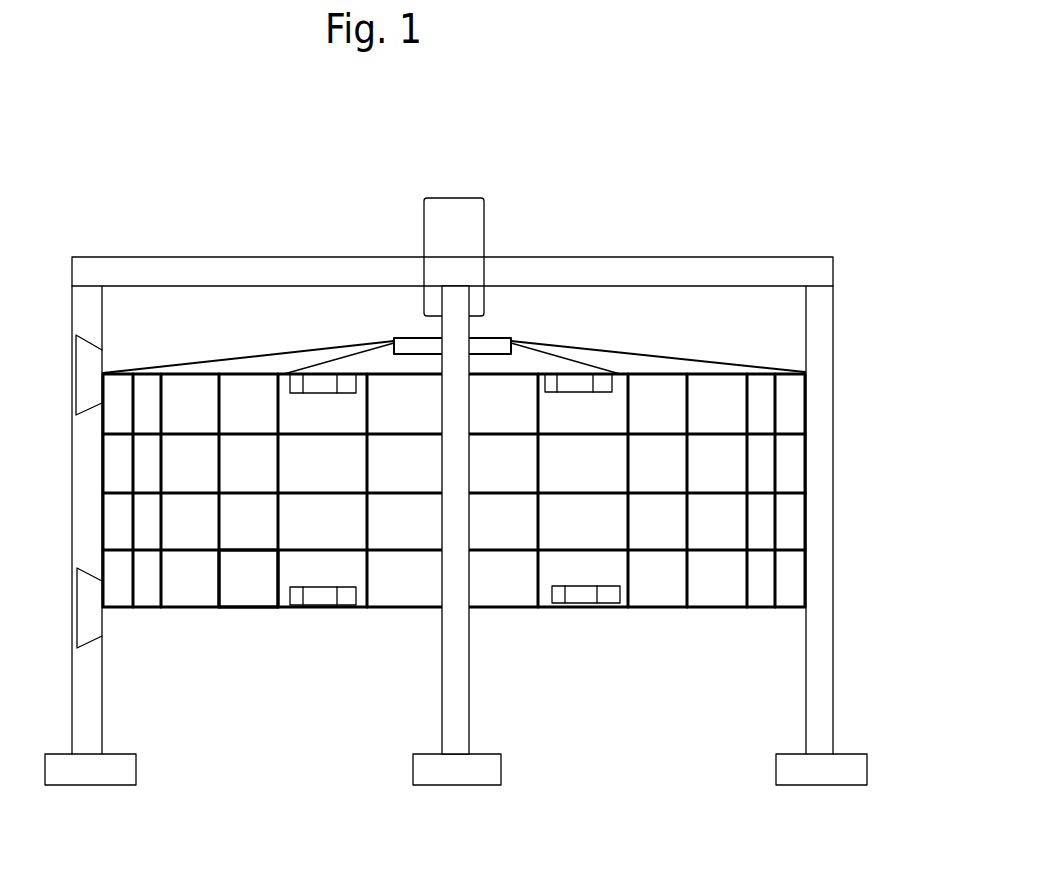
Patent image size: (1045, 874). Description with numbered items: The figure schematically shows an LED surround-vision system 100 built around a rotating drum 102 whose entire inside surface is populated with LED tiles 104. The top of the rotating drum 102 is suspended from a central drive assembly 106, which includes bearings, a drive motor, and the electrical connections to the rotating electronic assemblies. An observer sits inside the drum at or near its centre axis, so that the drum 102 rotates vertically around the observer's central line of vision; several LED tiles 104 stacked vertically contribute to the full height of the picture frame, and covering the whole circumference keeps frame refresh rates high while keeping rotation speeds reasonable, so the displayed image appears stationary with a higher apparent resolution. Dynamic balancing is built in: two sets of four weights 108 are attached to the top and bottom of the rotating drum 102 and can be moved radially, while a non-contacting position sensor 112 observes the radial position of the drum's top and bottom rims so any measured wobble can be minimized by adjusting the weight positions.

The LED surround-vision system 100 is at (572, 122).
The rotating drum 102 is at (729, 569).
The LED tiles 104 is at (261, 590).
The central drive assembly 106 is at (413, 229).
The weights 108 is at (578, 608).
The non-contacting position sensor 112 is at (114, 626).